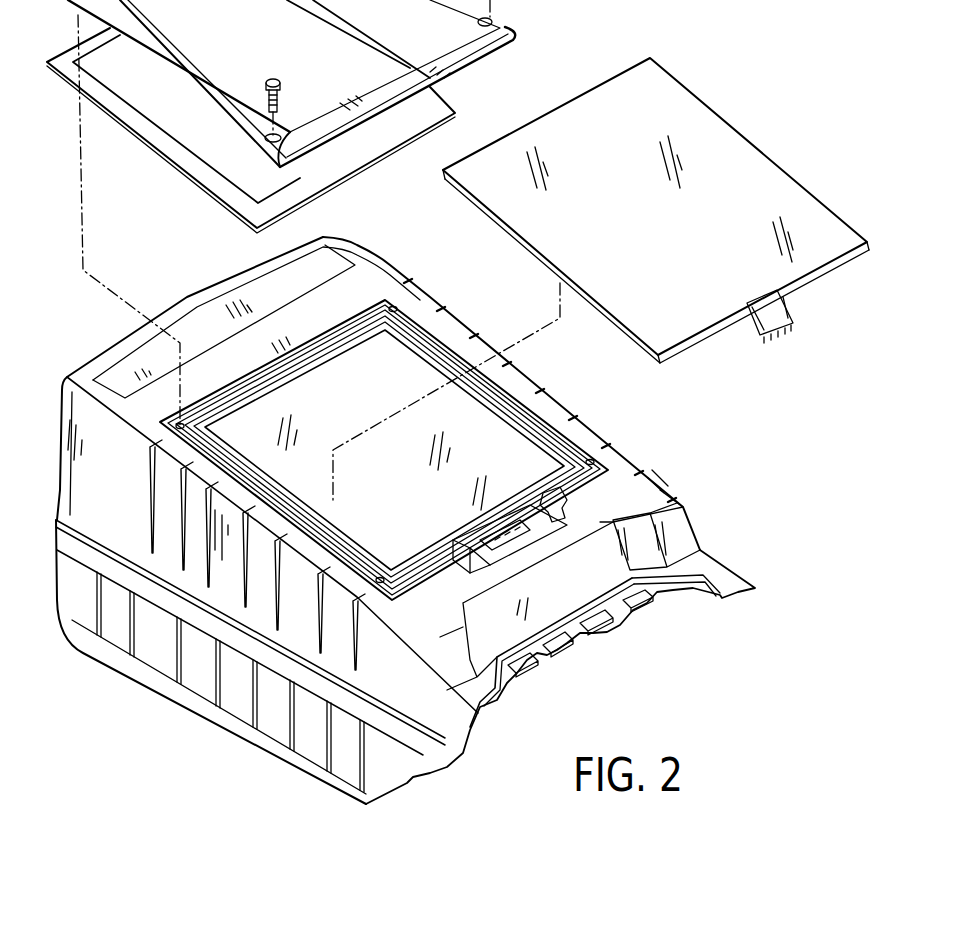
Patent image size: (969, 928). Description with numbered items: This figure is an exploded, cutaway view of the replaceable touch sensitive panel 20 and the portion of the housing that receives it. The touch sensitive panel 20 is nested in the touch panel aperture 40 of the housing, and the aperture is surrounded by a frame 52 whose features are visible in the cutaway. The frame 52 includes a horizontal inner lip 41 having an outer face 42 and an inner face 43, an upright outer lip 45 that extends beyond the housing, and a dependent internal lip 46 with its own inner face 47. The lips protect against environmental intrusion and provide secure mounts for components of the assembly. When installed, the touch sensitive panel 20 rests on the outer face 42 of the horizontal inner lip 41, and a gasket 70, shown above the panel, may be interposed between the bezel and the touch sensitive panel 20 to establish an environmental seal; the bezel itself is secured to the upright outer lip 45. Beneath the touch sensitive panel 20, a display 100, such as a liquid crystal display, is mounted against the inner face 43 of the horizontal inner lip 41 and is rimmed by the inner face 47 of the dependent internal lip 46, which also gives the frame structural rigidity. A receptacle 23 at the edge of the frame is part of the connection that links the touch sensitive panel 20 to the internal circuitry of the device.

The touch sensitive panel 20 is at (707, 148).
The receptacle 23 is at (560, 550).
The touch panel aperture 40 is at (473, 437).
The horizontal inner lip 41 is at (572, 452).
The outer face 42 is at (548, 410).
The inner face 43 is at (545, 502).
The upright outer lip 45 is at (598, 471).
The dependent internal lip 46 is at (645, 500).
The inner face 47 is at (547, 508).
The frame 52 is at (455, 383).
The gasket 70 is at (287, 0).
The display 100 is at (360, 370).